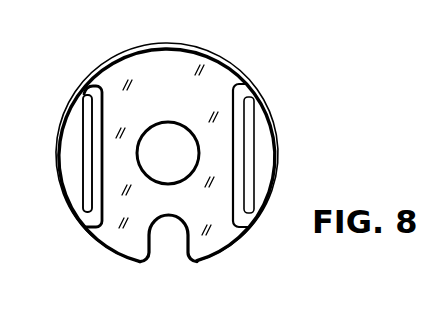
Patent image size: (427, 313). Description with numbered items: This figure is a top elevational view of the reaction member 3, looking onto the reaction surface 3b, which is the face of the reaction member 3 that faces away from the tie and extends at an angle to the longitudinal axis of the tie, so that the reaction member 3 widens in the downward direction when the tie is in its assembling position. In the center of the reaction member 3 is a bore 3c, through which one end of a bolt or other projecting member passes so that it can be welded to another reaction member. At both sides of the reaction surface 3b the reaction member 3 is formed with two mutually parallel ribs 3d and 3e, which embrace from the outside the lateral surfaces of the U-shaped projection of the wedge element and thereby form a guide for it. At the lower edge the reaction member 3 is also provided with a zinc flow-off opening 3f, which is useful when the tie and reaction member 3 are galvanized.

The reaction member 3 is at (276, 108).
The reaction surface 3b is at (128, 77).
The bore 3c is at (168, 121).
The rib 3d is at (82, 147).
The rib 3e is at (262, 159).
The zinc flow-off opening 3f is at (150, 239).